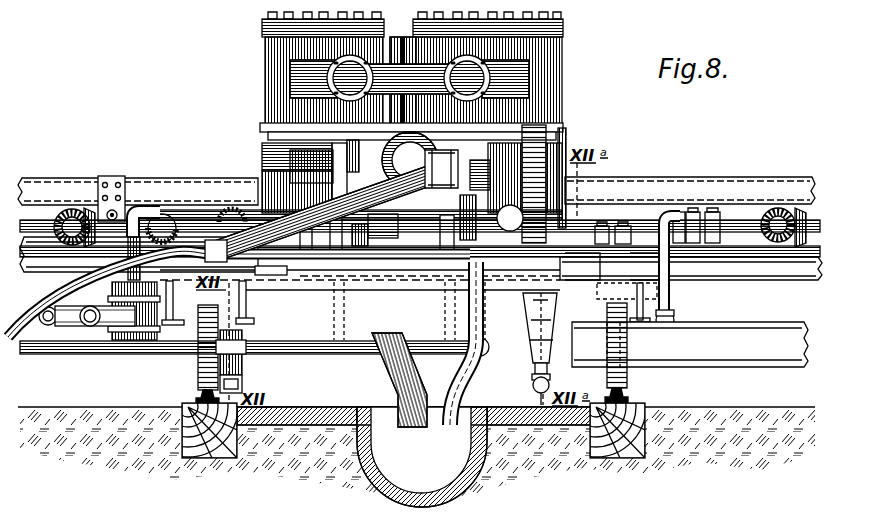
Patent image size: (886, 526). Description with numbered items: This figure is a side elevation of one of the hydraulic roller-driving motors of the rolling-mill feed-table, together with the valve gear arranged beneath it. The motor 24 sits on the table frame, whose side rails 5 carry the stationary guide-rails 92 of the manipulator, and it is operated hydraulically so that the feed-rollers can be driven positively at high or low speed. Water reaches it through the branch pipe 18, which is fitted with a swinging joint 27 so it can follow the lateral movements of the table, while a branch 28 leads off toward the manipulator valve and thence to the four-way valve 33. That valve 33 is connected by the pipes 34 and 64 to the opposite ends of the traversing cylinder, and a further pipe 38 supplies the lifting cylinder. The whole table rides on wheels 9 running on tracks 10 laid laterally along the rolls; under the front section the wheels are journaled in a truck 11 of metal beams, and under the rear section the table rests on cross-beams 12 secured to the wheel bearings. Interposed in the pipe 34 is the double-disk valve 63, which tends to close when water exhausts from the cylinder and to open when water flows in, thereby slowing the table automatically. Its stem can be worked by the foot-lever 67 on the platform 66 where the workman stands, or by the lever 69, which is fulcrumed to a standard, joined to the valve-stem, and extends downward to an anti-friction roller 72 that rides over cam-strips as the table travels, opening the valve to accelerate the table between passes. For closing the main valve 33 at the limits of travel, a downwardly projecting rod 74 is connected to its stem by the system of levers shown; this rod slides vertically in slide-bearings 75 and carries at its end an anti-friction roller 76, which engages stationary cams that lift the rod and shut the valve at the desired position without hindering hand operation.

The roller-driving motor 24 is at (411, 74).
The stationary guide-rail 92 is at (416, 199).
The branch pipe 28 is at (190, 222).
The side rail 5 is at (139, 254).
The pipe 64 is at (58, 294).
The swinging joint 27 is at (120, 310).
The branch pipe 38 is at (430, 297).
The branch pipe 18 is at (95, 321).
The pipe 34 is at (70, 355).
The cross-beam 12 is at (648, 300).
The lever 69 is at (246, 303).
The foot-lever 67 is at (275, 279).
The platform 66 is at (430, 283).
The four-way valve 33 is at (364, 197).
The valve 63 is at (240, 364).
The anti-friction roller 72 is at (240, 383).
The wheel 9 is at (198, 371).
The track 10 is at (200, 396).
The slide-bearing 75 is at (530, 350).
The rod 74 is at (534, 374).
The anti-friction roller 76 is at (532, 388).
The truck 11 is at (690, 344).